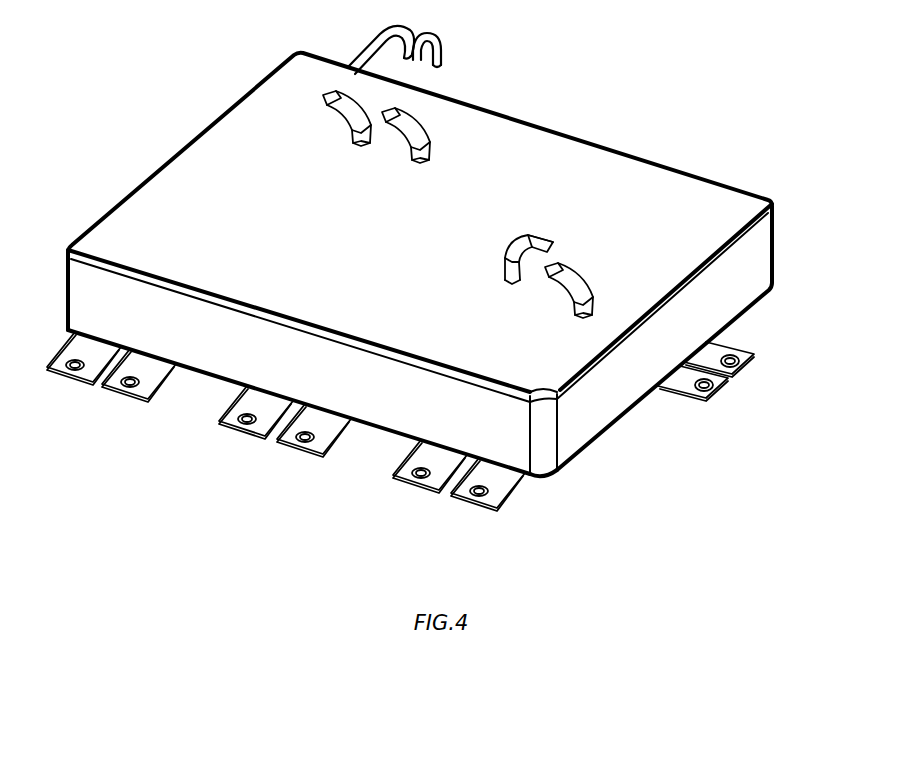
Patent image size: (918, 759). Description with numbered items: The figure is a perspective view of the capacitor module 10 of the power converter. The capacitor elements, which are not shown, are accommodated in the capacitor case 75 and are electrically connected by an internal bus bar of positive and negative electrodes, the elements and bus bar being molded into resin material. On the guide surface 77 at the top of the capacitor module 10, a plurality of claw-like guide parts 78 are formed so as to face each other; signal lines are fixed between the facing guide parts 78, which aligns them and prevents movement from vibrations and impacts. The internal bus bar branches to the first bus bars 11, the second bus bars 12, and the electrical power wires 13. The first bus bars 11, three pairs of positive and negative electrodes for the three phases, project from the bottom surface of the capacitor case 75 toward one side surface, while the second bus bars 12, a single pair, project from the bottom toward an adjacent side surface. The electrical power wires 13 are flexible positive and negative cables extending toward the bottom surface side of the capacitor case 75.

The capacitor module 10 is at (588, 142).
The first bus bars 11 is at (480, 510).
The second bus bars 12 is at (783, 403).
The electrical power wires 13 is at (398, 26).
The capacitor case 75 is at (757, 254).
The guide surface 77 is at (413, 235).
The guide parts 78 is at (408, 139).